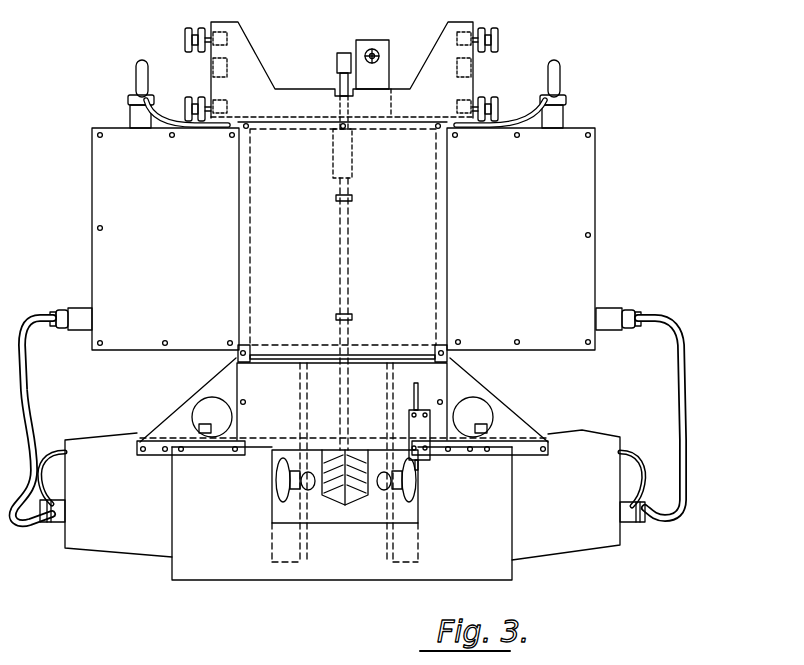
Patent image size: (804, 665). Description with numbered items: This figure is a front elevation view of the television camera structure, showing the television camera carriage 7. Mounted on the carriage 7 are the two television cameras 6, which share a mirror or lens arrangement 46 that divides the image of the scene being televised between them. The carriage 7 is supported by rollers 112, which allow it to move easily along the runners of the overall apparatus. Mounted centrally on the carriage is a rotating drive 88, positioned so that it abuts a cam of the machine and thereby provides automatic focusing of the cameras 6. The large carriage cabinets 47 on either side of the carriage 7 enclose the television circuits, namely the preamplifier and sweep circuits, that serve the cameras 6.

The television camera 6 is at (107, 546).
The television camera carriage 7 is at (597, 220).
The mirror or lens arrangement 46 is at (353, 497).
The carriage cabinet 47 is at (168, 243).
The rotating drive 88 is at (338, 68).
The roller 112 is at (190, 30).